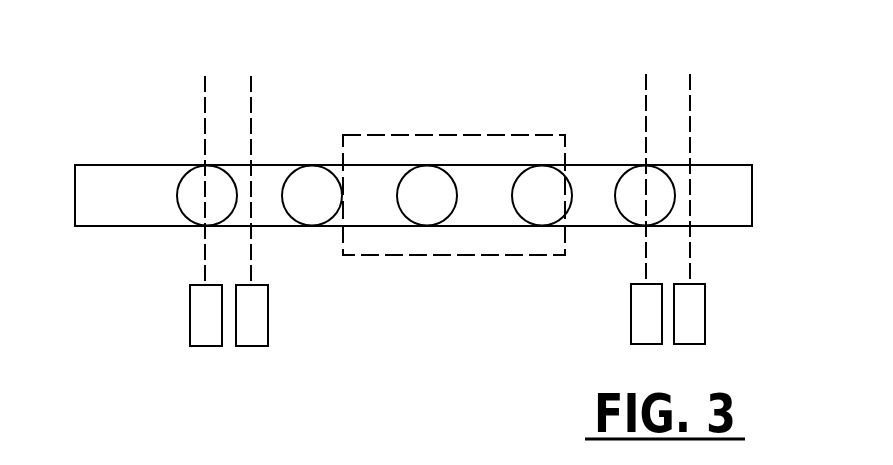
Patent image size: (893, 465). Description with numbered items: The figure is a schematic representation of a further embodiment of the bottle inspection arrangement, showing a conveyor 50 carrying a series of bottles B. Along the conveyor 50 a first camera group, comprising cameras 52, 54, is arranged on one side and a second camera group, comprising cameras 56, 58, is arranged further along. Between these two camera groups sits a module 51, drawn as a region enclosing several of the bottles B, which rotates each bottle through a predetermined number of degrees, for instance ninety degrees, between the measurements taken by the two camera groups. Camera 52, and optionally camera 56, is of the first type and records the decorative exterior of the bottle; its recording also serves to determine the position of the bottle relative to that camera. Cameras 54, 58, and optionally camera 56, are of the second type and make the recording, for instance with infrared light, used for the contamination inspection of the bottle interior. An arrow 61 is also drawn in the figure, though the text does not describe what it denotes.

The conveyor 50 is at (108, 185).
The bottle B is at (193, 185).
The module 51 is at (492, 117).
The camera 52 is at (200, 310).
The camera 54 is at (257, 317).
The camera 56 is at (641, 306).
The camera 58 is at (695, 313).
The direction of movement 61 is at (458, 464).